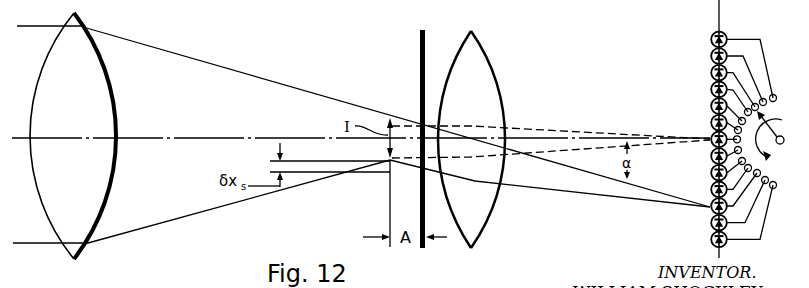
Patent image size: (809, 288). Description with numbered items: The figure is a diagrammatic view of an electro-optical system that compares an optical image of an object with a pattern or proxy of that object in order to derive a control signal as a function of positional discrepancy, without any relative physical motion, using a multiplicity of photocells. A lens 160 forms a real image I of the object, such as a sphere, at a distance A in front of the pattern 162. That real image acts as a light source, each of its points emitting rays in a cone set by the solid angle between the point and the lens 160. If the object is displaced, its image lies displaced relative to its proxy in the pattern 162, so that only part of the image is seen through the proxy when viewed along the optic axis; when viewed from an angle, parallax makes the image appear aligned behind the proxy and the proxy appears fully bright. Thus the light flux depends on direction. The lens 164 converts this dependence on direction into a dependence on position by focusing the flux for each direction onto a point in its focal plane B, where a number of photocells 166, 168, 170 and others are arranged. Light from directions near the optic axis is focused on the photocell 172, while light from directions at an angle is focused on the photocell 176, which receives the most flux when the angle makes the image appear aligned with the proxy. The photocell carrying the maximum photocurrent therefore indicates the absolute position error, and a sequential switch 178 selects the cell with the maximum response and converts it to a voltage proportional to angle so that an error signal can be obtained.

The lens 160 is at (97, 108).
The pattern 162 is at (420, 58).
The lens 164 is at (487, 110).
The photocell 166 is at (711, 40).
The photocell 168 is at (711, 56).
The photocell 170 is at (711, 73).
The photocell 172 is at (711, 144).
The photocell 176 is at (711, 211).
The sequential switch 178 is at (775, 28).